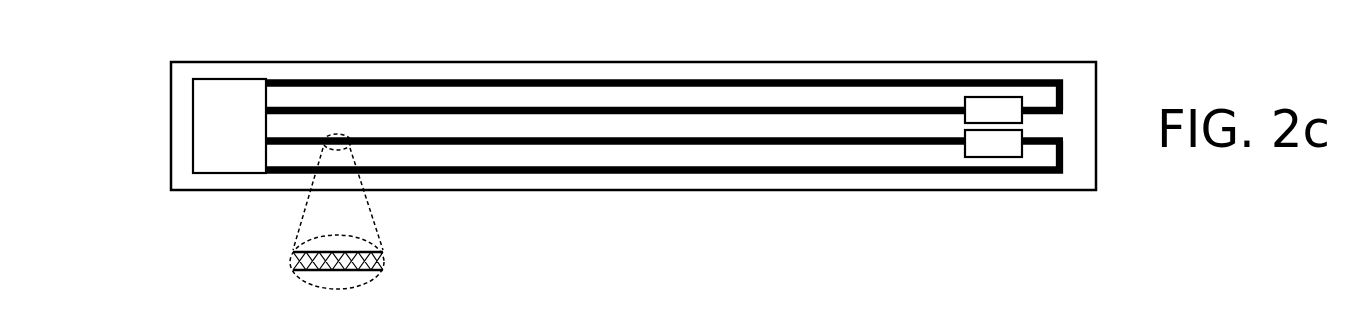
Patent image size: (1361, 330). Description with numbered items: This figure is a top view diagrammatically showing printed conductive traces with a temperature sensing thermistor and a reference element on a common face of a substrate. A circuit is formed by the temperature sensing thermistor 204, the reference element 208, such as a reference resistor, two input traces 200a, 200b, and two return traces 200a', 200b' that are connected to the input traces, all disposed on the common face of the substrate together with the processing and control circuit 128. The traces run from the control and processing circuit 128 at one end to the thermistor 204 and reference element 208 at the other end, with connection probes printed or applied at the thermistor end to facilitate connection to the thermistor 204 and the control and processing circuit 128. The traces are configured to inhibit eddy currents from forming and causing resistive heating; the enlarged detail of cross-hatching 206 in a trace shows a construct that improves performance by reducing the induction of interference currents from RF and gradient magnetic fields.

The control and processing circuit 128 is at (231, 79).
The input trace 200b is at (663, 58).
The input trace 200a is at (664, 58).
The return trace 200a' is at (664, 196).
The return trace 200b' is at (663, 196).
The temperature sensing thermistor 204 is at (993, 97).
The reference element 208 is at (993, 157).
The cross-hatching 206 is at (383, 261).